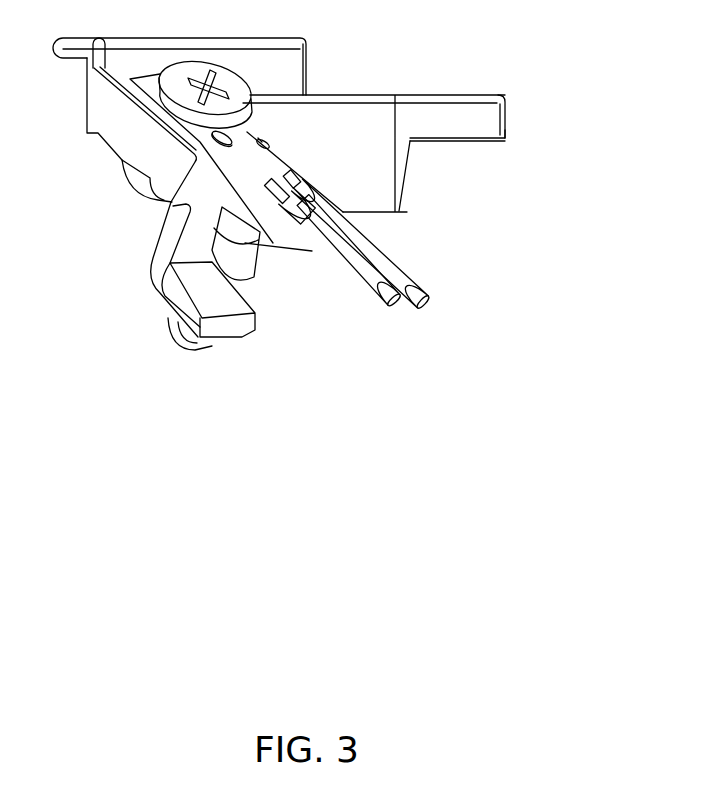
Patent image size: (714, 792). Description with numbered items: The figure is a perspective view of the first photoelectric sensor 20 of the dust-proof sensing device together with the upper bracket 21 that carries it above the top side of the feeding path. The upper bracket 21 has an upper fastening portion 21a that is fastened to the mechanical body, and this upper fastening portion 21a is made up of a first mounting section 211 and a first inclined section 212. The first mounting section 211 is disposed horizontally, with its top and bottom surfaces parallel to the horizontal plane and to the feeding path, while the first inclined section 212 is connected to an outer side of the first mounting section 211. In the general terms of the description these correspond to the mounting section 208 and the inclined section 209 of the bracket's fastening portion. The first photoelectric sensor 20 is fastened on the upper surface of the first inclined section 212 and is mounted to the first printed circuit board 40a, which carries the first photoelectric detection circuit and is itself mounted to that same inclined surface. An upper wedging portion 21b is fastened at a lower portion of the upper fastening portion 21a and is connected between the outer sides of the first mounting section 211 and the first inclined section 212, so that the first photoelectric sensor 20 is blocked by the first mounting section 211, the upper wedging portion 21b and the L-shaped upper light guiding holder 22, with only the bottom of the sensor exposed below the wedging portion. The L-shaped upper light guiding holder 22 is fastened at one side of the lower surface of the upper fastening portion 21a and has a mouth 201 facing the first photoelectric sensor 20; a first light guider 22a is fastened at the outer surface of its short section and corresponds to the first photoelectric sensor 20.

The mounting section 208 is at (363, 92).
The first mounting section 211 is at (452, 95).
The upper bracket 21 is at (484, 164).
The upper fastening portion 21a is at (503, 131).
The upper wedging portion 21b is at (401, 208).
The first printed circuit board 40a is at (355, 226).
The inclined section 209 is at (309, 251).
The first photoelectric sensor 20 is at (253, 281).
The first inclined section 212 is at (142, 200).
The L-shaped upper light guiding holder 22 is at (167, 247).
The mouth 201 is at (195, 290).
The first light guider 22a is at (207, 340).